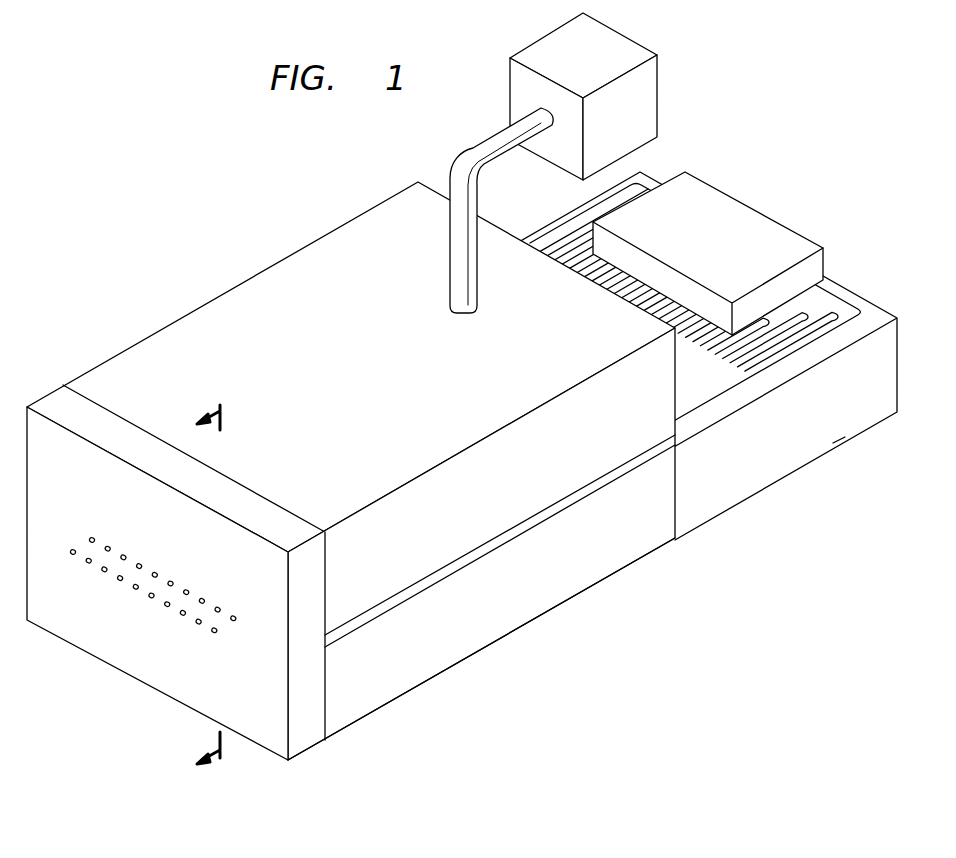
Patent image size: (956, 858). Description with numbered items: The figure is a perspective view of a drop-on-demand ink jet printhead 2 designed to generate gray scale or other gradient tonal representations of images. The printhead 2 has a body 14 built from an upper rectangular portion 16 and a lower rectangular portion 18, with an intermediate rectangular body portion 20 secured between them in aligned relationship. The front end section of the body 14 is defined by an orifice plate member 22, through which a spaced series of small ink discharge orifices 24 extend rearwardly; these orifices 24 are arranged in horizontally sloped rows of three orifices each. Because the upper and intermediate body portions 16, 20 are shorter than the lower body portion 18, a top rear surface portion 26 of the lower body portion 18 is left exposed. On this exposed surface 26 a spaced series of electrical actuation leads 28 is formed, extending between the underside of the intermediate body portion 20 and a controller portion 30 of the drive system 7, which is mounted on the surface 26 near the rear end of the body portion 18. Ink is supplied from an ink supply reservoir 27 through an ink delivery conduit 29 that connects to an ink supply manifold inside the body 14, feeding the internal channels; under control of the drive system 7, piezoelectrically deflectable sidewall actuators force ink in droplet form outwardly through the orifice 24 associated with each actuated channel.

The drop-on-demand ink jet printhead 2 is at (351, 452).
The drive system 7 is at (700, 342).
The body 14 is at (212, 301).
The upper rectangular body portion 16 is at (440, 477).
The lower rectangular body portion 18 is at (380, 698).
The intermediate rectangular body portion 20 is at (418, 588).
The orifice plate member 22 is at (57, 397).
The ink discharge orifices 24 is at (91, 539).
The top rear surface portion 26 is at (877, 316).
The ink supply reservoir 27 is at (537, 48).
The electrical actuation leads 28 is at (835, 320).
The ink delivery conduit 29 is at (458, 160).
The controller portion 30 is at (710, 197).